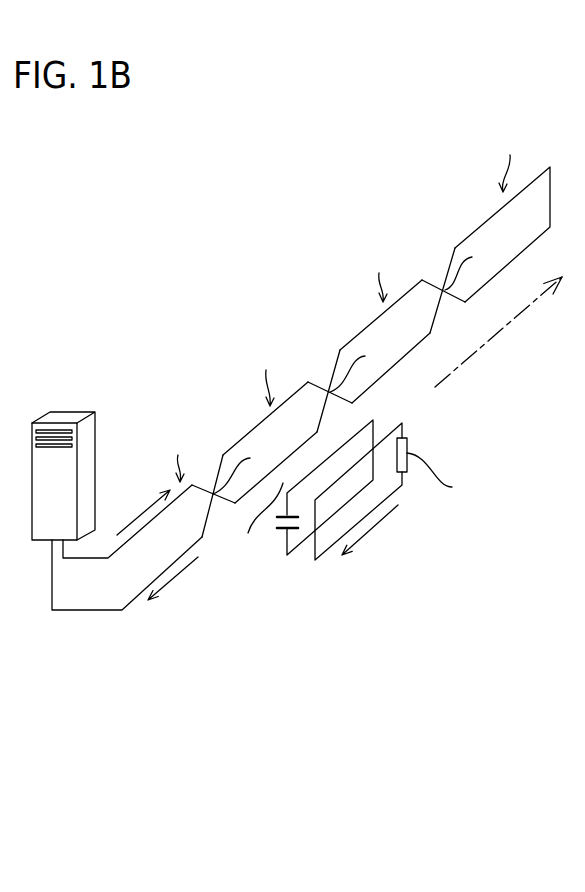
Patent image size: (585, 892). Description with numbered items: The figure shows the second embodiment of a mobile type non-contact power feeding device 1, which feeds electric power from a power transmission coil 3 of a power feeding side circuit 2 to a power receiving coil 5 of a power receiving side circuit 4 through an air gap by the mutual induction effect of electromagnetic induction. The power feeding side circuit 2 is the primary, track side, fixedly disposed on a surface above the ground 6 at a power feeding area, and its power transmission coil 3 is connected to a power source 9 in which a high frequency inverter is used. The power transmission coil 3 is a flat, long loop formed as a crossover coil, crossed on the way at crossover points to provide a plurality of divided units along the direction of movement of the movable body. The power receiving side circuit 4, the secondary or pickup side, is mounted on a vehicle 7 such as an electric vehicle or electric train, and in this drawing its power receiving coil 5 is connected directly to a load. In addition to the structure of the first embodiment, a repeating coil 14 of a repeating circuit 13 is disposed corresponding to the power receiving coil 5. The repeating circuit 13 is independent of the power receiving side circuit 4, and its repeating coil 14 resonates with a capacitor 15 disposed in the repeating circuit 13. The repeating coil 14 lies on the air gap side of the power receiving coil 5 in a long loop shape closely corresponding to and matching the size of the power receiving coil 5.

The non-contact power feeding device 1 is at (129, 274).
The power feeding side circuit 2 is at (203, 340).
The power transmission coil 3 is at (196, 425).
The power receiving side circuit 4 is at (440, 565).
The power receiving coil 5 is at (398, 488).
The ground 6 is at (293, 198).
The vehicle 7 is at (432, 407).
The power source 9 is at (75, 413).
The repeating circuit 13 is at (235, 633).
The repeating coil 14 is at (308, 548).
The capacitor 15 is at (283, 543).